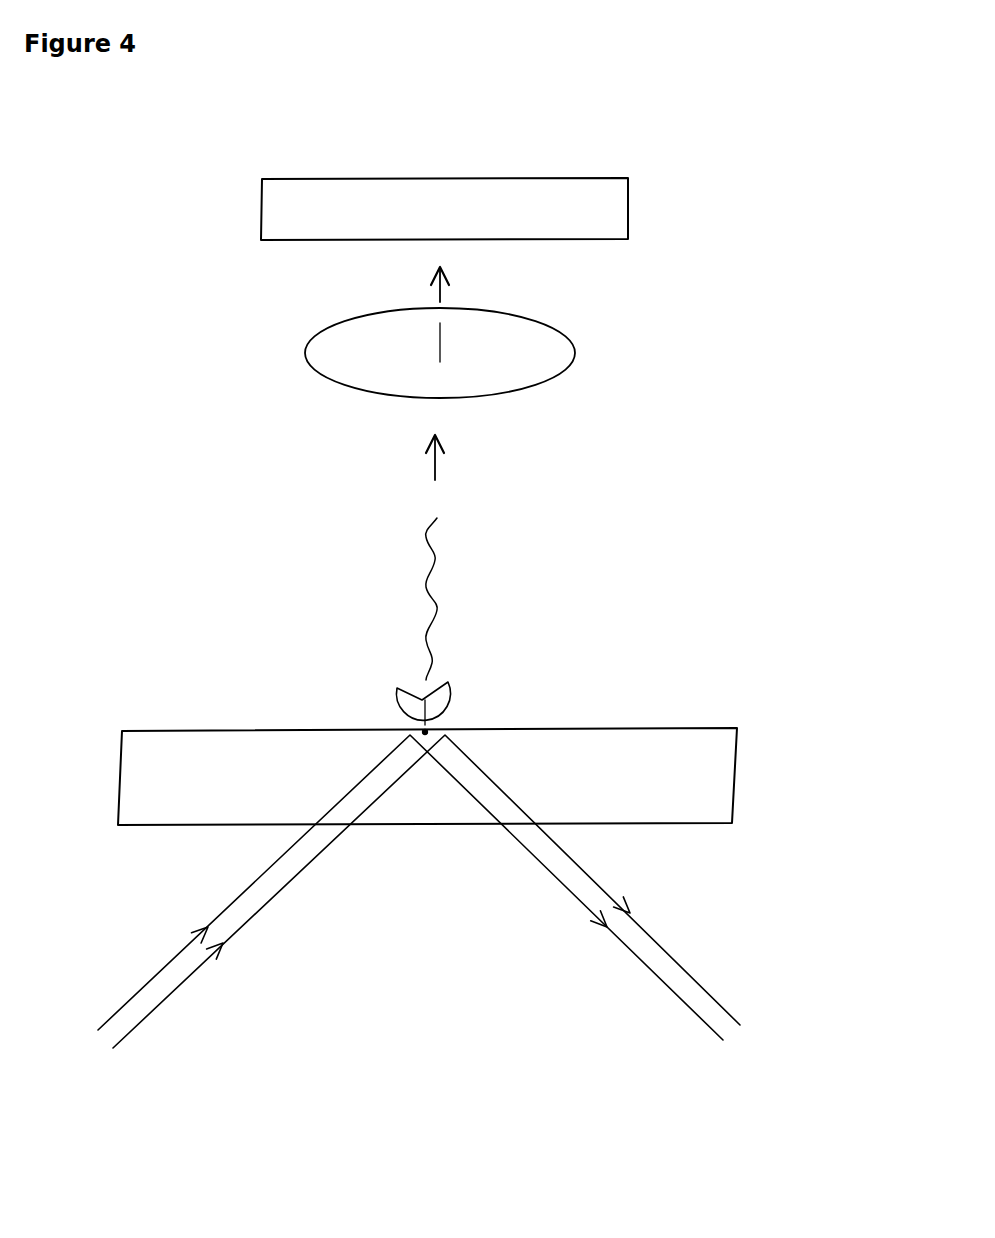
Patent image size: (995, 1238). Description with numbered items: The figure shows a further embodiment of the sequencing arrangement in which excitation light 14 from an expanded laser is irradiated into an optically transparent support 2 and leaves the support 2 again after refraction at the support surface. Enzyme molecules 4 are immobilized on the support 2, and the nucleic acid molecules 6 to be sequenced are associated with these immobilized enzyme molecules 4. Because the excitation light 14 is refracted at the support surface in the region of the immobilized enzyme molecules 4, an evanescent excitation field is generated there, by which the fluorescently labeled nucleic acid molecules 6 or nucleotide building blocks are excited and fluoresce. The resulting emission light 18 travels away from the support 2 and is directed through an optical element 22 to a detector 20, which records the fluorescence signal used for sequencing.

The optically transparent support 2 is at (750, 755).
The enzyme molecules 4 is at (390, 705).
The nucleic acid molecules 6 is at (453, 547).
The excitation light 14 is at (210, 982).
The emission light 18 is at (451, 459).
The detector 20 is at (638, 201).
The optical element 22 is at (638, 349).